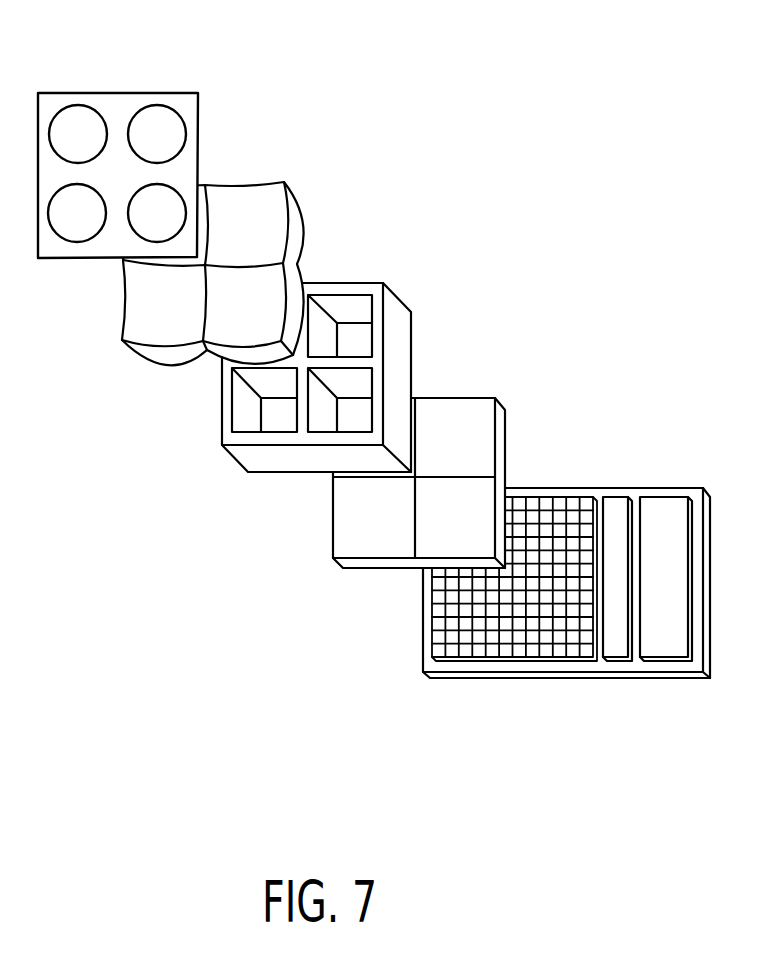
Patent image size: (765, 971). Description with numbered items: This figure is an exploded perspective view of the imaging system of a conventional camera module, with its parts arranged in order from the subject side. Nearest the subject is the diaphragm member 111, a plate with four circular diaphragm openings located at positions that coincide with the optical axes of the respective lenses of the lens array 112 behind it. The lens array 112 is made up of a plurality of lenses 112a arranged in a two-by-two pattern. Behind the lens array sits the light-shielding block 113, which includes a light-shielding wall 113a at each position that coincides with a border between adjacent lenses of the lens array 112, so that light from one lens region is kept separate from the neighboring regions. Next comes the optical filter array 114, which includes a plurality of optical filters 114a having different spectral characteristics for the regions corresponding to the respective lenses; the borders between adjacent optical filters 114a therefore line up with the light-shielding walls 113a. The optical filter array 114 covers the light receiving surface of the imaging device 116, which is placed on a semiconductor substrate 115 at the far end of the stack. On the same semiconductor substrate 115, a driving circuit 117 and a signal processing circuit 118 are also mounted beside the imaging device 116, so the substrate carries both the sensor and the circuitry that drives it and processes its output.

The diaphragm member 111 is at (118, 92).
The lens array 112 is at (235, 232).
The lens 112a is at (248, 207).
The light-shielding block 113 is at (299, 360).
The light-shielding wall 113a is at (348, 372).
The optical filter array 114 is at (442, 437).
The optical filter 114a is at (452, 418).
The semiconductor substrate 115 is at (568, 576).
The imaging device 116 is at (517, 652).
The driving circuit 117 is at (613, 652).
The signal processing circuit 118 is at (671, 652).